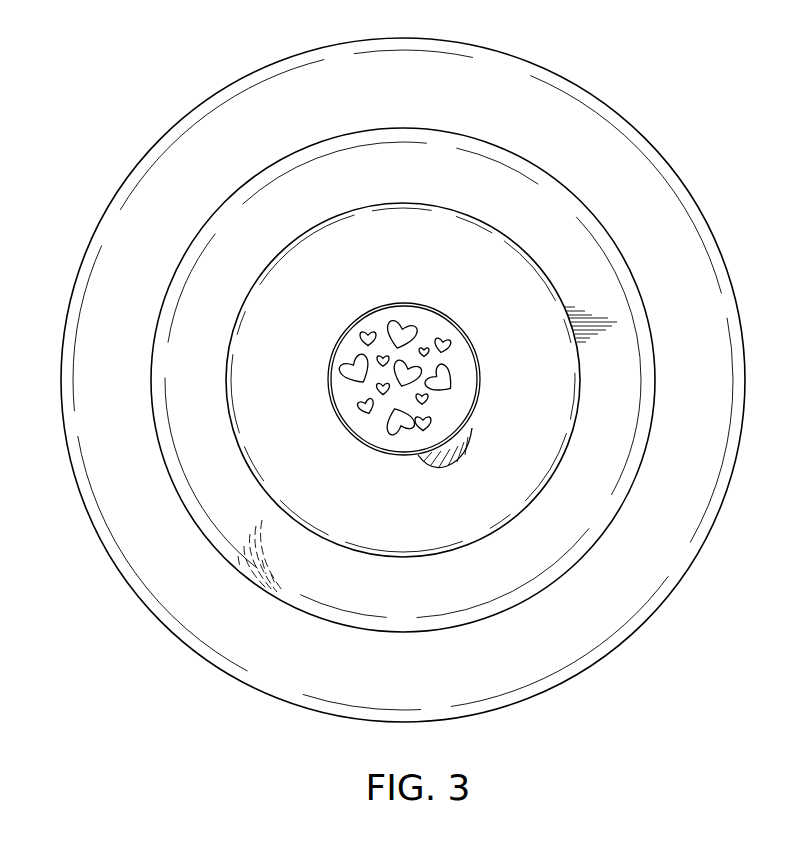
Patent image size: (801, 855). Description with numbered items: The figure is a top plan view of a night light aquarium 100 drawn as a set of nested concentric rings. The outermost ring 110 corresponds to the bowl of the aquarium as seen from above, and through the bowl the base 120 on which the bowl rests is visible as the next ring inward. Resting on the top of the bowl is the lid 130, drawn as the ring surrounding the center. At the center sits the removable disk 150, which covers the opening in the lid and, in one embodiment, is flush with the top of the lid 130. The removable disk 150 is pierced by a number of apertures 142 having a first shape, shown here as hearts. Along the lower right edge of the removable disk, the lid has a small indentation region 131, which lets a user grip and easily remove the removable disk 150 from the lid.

The night light aquarium 100 is at (712, 105).
The outer ring 110 is at (742, 313).
The base 120 is at (650, 327).
The lid 130 is at (323, 284).
The indentation region 131 is at (468, 427).
The apertures 142 is at (395, 432).
The removable disk 150 is at (465, 385).